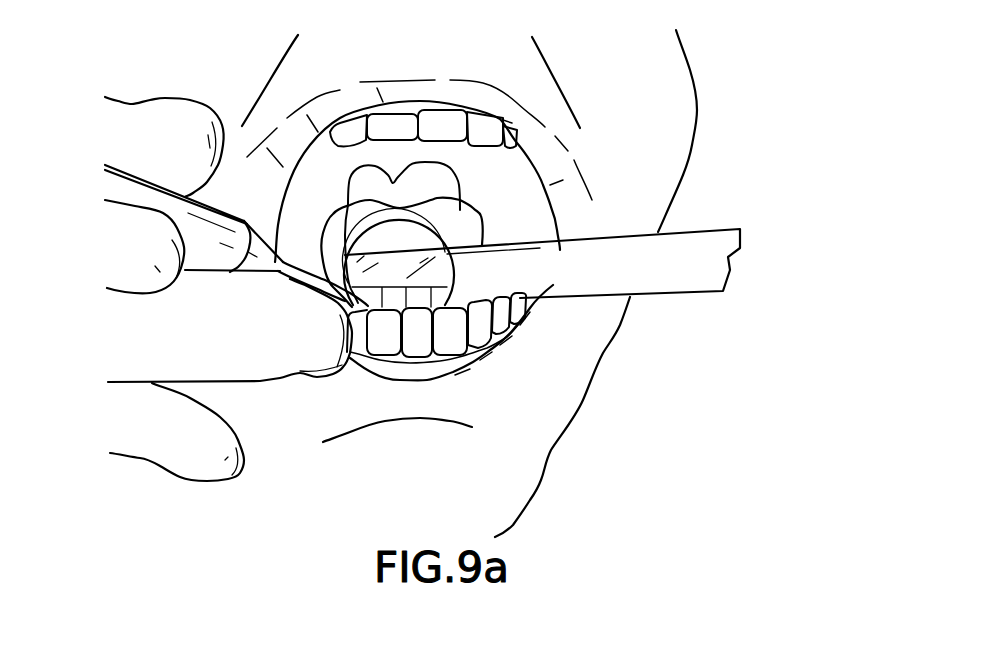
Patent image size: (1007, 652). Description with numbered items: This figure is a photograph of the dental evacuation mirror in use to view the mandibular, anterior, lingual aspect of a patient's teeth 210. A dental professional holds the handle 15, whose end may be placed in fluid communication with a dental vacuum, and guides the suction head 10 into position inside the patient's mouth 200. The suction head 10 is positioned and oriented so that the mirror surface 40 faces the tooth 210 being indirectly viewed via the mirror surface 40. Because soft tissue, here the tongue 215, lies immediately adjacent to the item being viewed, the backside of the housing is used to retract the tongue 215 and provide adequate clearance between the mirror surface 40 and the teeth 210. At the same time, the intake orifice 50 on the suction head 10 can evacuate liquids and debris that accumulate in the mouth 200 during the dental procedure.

The suction head 10 is at (530, 255).
The handle 15 is at (652, 272).
The mirror surface 40 is at (447, 268).
The intake orifice 50 is at (398, 230).
The patient's mouth 200 is at (444, 195).
The teeth 210 is at (438, 125).
The tongue 215 is at (458, 233).